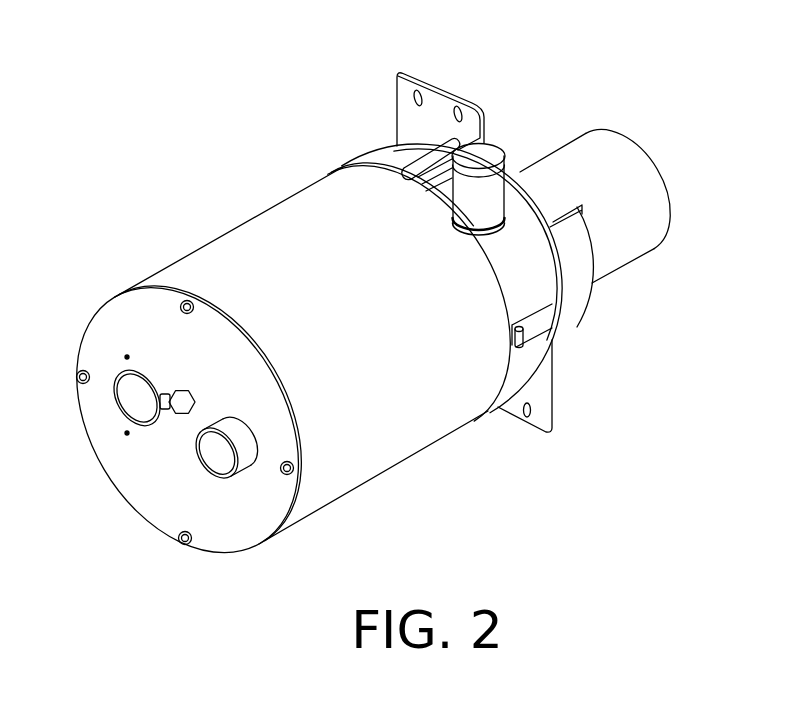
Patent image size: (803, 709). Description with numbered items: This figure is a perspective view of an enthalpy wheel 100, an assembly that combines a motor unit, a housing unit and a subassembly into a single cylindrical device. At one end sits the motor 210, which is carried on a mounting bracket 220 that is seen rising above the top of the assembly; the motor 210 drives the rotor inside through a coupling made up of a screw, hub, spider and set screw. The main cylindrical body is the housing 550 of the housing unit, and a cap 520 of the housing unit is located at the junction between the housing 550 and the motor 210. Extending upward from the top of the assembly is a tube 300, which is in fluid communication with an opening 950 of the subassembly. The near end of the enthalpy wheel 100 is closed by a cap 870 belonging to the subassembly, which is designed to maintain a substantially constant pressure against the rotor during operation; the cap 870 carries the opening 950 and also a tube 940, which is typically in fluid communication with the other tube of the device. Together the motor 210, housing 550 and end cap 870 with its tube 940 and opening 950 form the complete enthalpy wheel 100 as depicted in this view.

The enthalpy wheel 100 is at (372, 319).
The motor 210 is at (602, 160).
The mounting bracket 220 is at (437, 85).
The tube 300 is at (487, 193).
The cap 520 is at (520, 370).
The housing 550 is at (413, 430).
The cap 870 is at (223, 533).
The tube 940 is at (247, 453).
The opening 950 is at (132, 400).